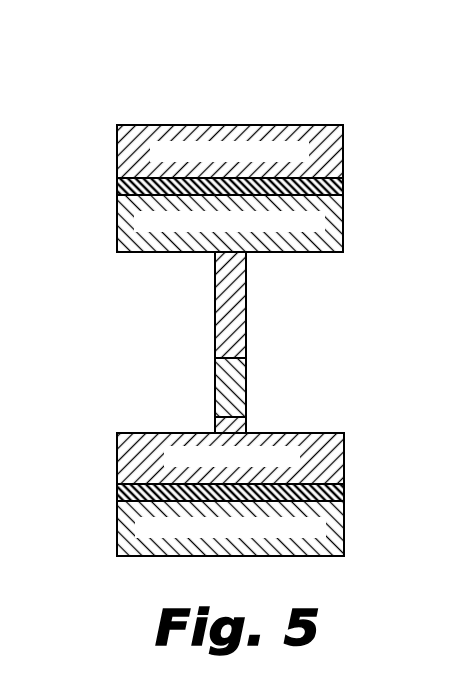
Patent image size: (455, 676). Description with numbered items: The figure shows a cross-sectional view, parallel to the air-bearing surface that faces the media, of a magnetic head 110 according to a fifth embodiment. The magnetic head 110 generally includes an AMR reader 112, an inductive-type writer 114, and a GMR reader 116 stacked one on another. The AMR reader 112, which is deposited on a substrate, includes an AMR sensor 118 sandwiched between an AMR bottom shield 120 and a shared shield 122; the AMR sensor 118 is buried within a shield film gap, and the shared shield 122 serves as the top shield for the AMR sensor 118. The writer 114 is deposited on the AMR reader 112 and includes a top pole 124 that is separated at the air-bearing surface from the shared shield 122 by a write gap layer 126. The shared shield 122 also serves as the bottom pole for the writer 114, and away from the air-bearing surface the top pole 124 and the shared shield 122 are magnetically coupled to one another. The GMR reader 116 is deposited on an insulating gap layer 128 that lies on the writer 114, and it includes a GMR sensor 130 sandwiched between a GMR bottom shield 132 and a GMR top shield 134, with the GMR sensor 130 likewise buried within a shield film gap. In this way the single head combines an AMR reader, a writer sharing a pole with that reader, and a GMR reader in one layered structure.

The magnetic head 110 is at (294, 72).
The AMR reader 112 is at (100, 433).
The inductive-type writer 114 is at (82, 358).
The GMR reader 116 is at (70, 125).
The AMR sensor 118 is at (270, 492).
The AMR bottom shield 120 is at (344, 528).
The shared shield 122 is at (344, 443).
The top pole 124 is at (246, 383).
The write gap layer 126 is at (250, 423).
The insulating gap layer 128 is at (250, 283).
The GMR sensor 130 is at (270, 186).
The GMR bottom shield 132 is at (343, 223).
The GMR top shield 134 is at (343, 143).